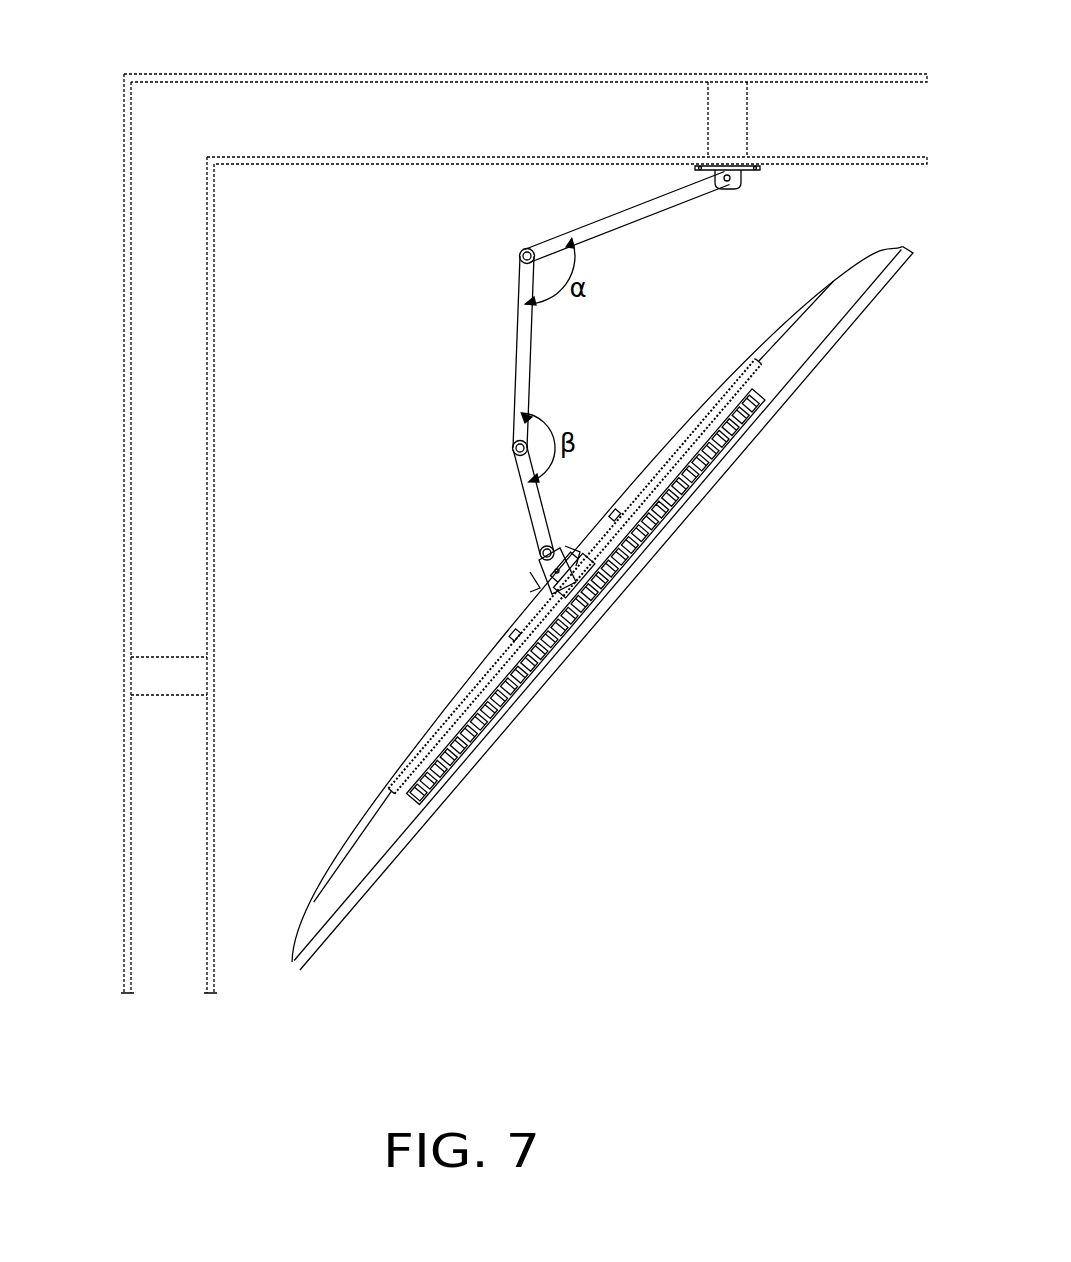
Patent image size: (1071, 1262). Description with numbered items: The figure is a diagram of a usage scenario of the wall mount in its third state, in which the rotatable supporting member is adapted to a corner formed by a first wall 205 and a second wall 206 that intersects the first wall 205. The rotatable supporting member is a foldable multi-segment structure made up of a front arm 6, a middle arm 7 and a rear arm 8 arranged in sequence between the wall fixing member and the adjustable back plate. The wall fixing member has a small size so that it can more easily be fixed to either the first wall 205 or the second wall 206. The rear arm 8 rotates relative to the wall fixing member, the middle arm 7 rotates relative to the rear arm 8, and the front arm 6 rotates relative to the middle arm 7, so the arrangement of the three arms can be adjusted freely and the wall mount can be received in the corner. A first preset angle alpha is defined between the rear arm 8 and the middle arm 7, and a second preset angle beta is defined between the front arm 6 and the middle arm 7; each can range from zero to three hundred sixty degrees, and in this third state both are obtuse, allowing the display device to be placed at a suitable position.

The first wall 205 is at (526, 78).
The second wall 206 is at (124, 190).
The rear arm 8 is at (601, 224).
The middle arm 7 is at (522, 342).
The front arm 6 is at (532, 498).